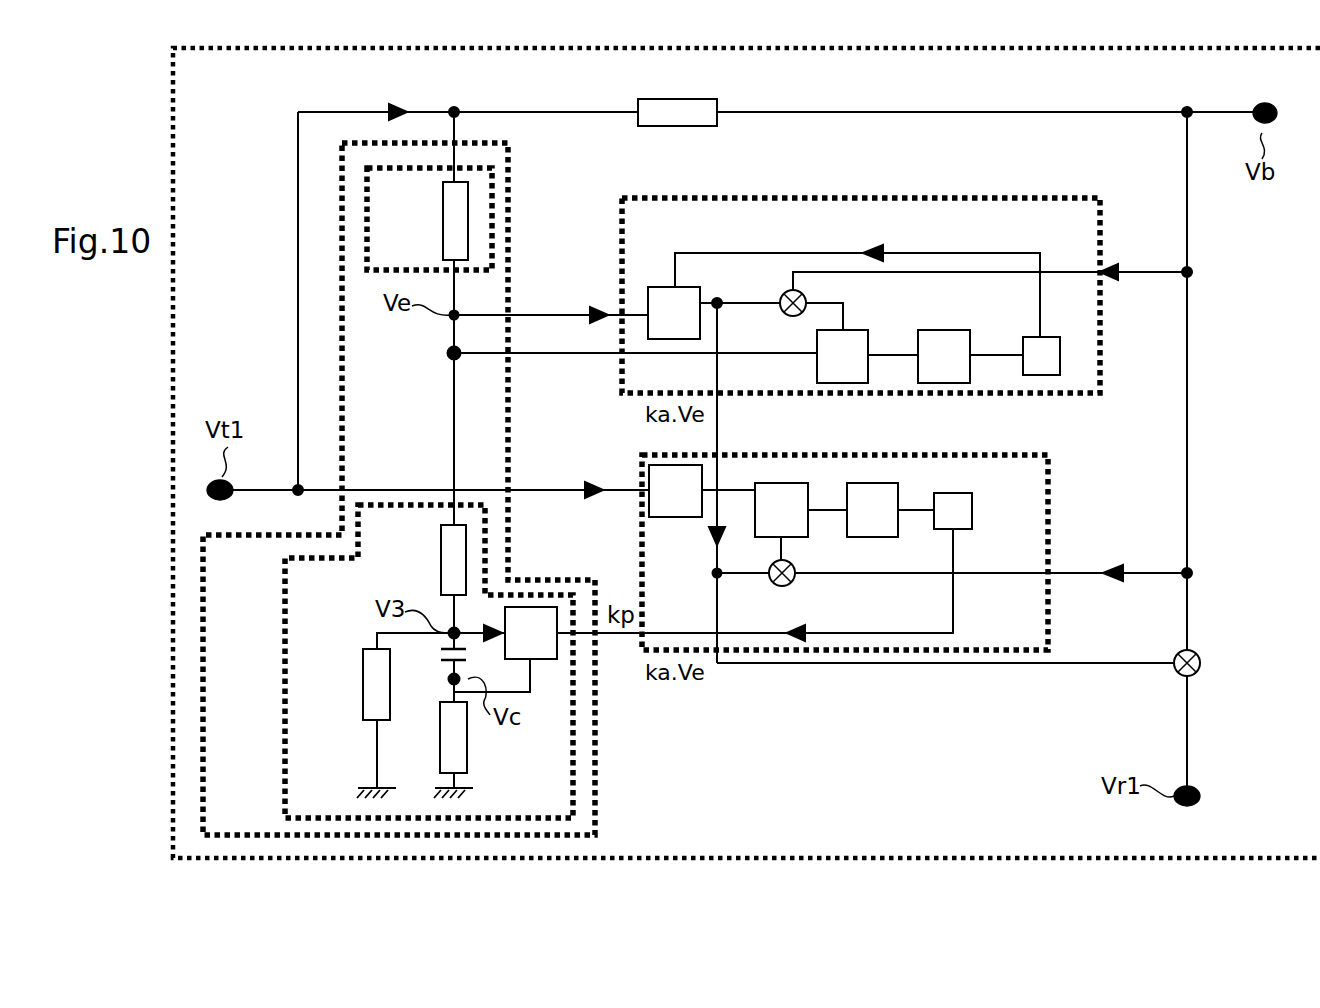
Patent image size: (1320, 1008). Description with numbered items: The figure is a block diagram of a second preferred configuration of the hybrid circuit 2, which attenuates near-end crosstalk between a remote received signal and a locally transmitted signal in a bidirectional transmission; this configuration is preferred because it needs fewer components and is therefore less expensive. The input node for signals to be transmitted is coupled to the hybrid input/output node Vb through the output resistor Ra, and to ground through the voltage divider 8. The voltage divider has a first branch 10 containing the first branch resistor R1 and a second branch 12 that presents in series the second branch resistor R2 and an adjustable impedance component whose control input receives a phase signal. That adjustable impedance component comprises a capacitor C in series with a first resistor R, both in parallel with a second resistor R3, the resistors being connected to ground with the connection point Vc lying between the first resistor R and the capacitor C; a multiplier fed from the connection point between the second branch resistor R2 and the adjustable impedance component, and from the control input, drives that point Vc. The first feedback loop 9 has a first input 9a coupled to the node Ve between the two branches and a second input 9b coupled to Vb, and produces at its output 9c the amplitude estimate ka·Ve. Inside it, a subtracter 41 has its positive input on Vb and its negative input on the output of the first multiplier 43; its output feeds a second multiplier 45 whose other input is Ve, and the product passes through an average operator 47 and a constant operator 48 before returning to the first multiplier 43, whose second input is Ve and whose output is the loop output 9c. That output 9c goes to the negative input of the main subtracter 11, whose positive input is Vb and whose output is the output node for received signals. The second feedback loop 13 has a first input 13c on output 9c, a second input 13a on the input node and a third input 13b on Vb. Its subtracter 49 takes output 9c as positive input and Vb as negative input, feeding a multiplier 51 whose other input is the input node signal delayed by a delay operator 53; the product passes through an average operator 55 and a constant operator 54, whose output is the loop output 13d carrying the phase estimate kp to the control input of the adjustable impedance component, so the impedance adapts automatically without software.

The hybrid circuit 2 is at (1319, 322).
The voltage divider 8 is at (342, 398).
The first feedback loop 9 is at (1017, 197).
The first input of the first feedback loop 9a is at (635, 318).
The second input of the first feedback loop 9b is at (1105, 272).
The output of the first feedback loop 9c is at (720, 394).
The first branch 10 is at (366, 245).
The main subtracter 11 is at (1201, 660).
The second branch 12 is at (283, 755).
The second feedback loop 13 is at (1050, 598).
The second input of the second feedback loop 13a is at (643, 497).
The third input of the second feedback loop 13b is at (1048, 580).
The first input of the second feedback loop 13c is at (718, 640).
The output of the second feedback loop 13d is at (645, 640).
The subtracter 41 is at (786, 311).
The first multiplier 43 is at (655, 290).
The second multiplier 45 is at (857, 336).
The average operator 47 is at (937, 336).
The constant operator 48 is at (1060, 348).
The subtracter 49 is at (797, 568).
The multiplier 51 is at (808, 530).
The delay operator 53 is at (648, 508).
The constant operator 54 is at (972, 500).
The average operator 55 is at (898, 528).
The output resistor Ra is at (661, 127).
The first branch resistor R1 is at (443, 217).
The second branch resistor R2 is at (441, 548).
The second resistor R3 is at (363, 702).
The first resistor R is at (460, 757).
The capacitor C is at (440, 651).